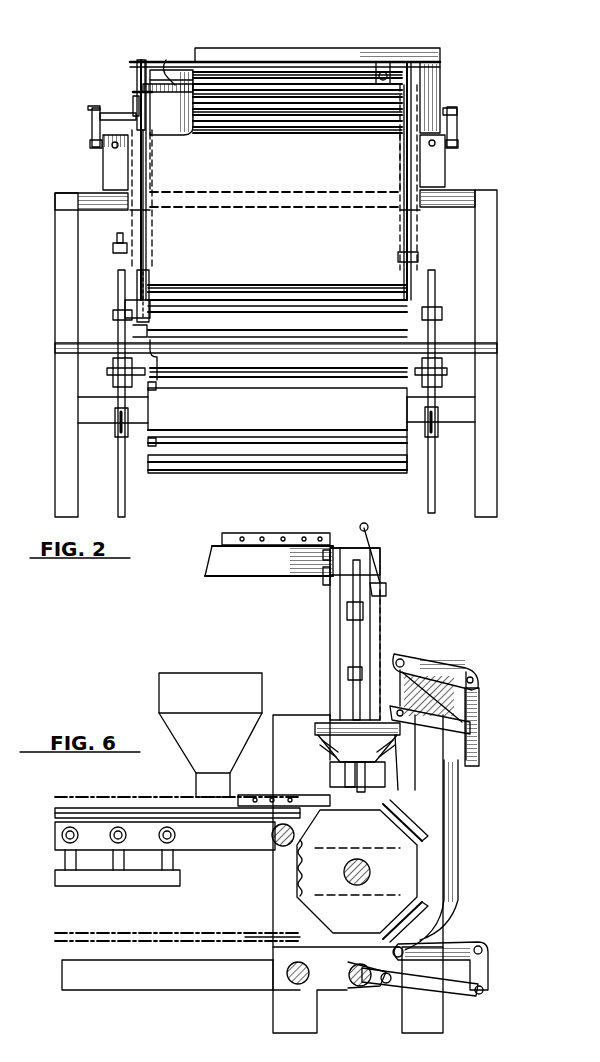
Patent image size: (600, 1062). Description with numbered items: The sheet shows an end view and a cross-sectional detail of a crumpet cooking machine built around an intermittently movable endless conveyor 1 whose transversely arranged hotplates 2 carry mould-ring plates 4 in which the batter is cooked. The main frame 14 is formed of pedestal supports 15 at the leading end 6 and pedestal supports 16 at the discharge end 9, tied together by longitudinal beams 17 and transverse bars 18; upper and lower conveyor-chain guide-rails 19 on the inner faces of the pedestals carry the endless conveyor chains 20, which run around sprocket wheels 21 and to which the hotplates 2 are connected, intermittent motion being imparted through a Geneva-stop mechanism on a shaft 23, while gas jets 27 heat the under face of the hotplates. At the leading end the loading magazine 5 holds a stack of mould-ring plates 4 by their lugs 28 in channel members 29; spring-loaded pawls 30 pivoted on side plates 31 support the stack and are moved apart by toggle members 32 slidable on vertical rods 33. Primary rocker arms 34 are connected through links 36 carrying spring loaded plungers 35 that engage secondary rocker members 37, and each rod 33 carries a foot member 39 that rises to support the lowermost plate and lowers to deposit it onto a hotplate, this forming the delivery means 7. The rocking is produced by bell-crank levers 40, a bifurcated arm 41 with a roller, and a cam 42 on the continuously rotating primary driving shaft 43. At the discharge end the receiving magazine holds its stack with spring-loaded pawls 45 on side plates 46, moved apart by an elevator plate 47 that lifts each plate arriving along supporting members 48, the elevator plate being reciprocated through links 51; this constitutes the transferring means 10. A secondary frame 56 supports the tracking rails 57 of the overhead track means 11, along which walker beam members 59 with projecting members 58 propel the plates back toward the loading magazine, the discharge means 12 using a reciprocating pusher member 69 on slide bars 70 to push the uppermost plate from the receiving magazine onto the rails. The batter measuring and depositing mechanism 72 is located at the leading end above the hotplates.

In FIG. 2, the endless conveyor 1 is at (218, 484).
In FIG. 6, the endless conveyor 1 is at (222, 932).
In FIG. 2, the hotplate 2 is at (277, 409).
In FIG. 6, the hotplate 2 is at (396, 832).
In FIG. 6, the mould-ring plate 4 is at (382, 612).
In FIG. 6, the loading magazine 5 is at (372, 636).
In FIG. 6, the leading end 6 is at (450, 762).
In FIG. 6, the mould-ring plate delivery means 7 is at (304, 657).
In FIG. 2, the discharge end 9 is at (80, 316).
In FIG. 2, the mould-ring plate transferring means 10 is at (428, 298).
In FIG. 2, the overhead longitudinally-extending track means 11 is at (120, 86).
In FIG. 6, the overhead longitudinally-extending track means 11 is at (238, 586).
In FIG. 2, the mould-ring plate discharge means 12 is at (383, 62).
In FIG. 6, the main frame 14 is at (110, 990).
In FIG. 6, the pedestal supports 15 is at (317, 1022).
In FIG. 2, the pedestal supports 16 is at (70, 372).
In FIG. 6, the longitudinal beams 17 is at (218, 990).
In FIG. 6, the transverse bars 18 is at (276, 845).
In FIG. 6, the conveyor-chain guide-rails 19 is at (240, 822).
In FIG. 2, the endless conveyor chains 20 is at (152, 385).
In FIG. 6, the endless conveyor chains 20 is at (94, 930).
In FIG. 2, the sprocket wheels 21 is at (150, 445).
In FIG. 6, the sprocket wheels 21 is at (312, 872).
In FIG. 6, the shaft 23 is at (368, 869).
In FIG. 6, the jets 27 is at (166, 876).
In FIG. 6, the lugs 28 is at (262, 533).
In FIG. 6, the channel members 29 is at (373, 782).
In FIG. 6, the spring-loaded pawls 30 is at (318, 760).
In FIG. 6, the side plates 31 is at (328, 716).
In FIG. 6, the toggle members 32 is at (440, 782).
In FIG. 6, the vertical rods 33 is at (352, 628).
In FIG. 6, the primary rocker arms 34 is at (440, 658).
In FIG. 6, the spring loaded plungers 35 is at (466, 708).
In FIG. 6, the links 36 is at (460, 780).
In FIG. 6, the secondary rocker members 37 is at (404, 720).
In FIG. 6, the foot member 39 is at (348, 782).
In FIG. 6, the bell-crank levers 40 is at (462, 942).
In FIG. 6, the bifurcated arm 41 is at (470, 996).
In FIG. 6, the cam 42 is at (384, 984).
In FIG. 6, the primary driving shaft 43 is at (352, 988).
In FIG. 2, the spring-loaded pawls 45 is at (152, 322).
In FIG. 2, the side plates 46 is at (130, 258).
In FIG. 2, the elevator plate 47 is at (252, 348).
In FIG. 2, the supporting members 48 is at (135, 331).
In FIG. 2, the links 51 is at (124, 517).
In FIG. 2, the secondary frame 56 is at (171, 102).
In FIG. 6, the secondary frame 56 is at (304, 570).
In FIG. 2, the tracking rails 57 is at (171, 104).
In FIG. 6, the tracking rails 57 is at (210, 548).
In FIG. 2, the projecting members 58 is at (142, 60).
In FIG. 2, the walker beam members 59 is at (132, 102).
In FIG. 2, the reciprocating pusher member 69 is at (106, 174).
In FIG. 2, the slide bars 70 is at (118, 145).
In FIG. 6, the crumpet batter measuring and depositing mechanism 72 is at (210, 735).